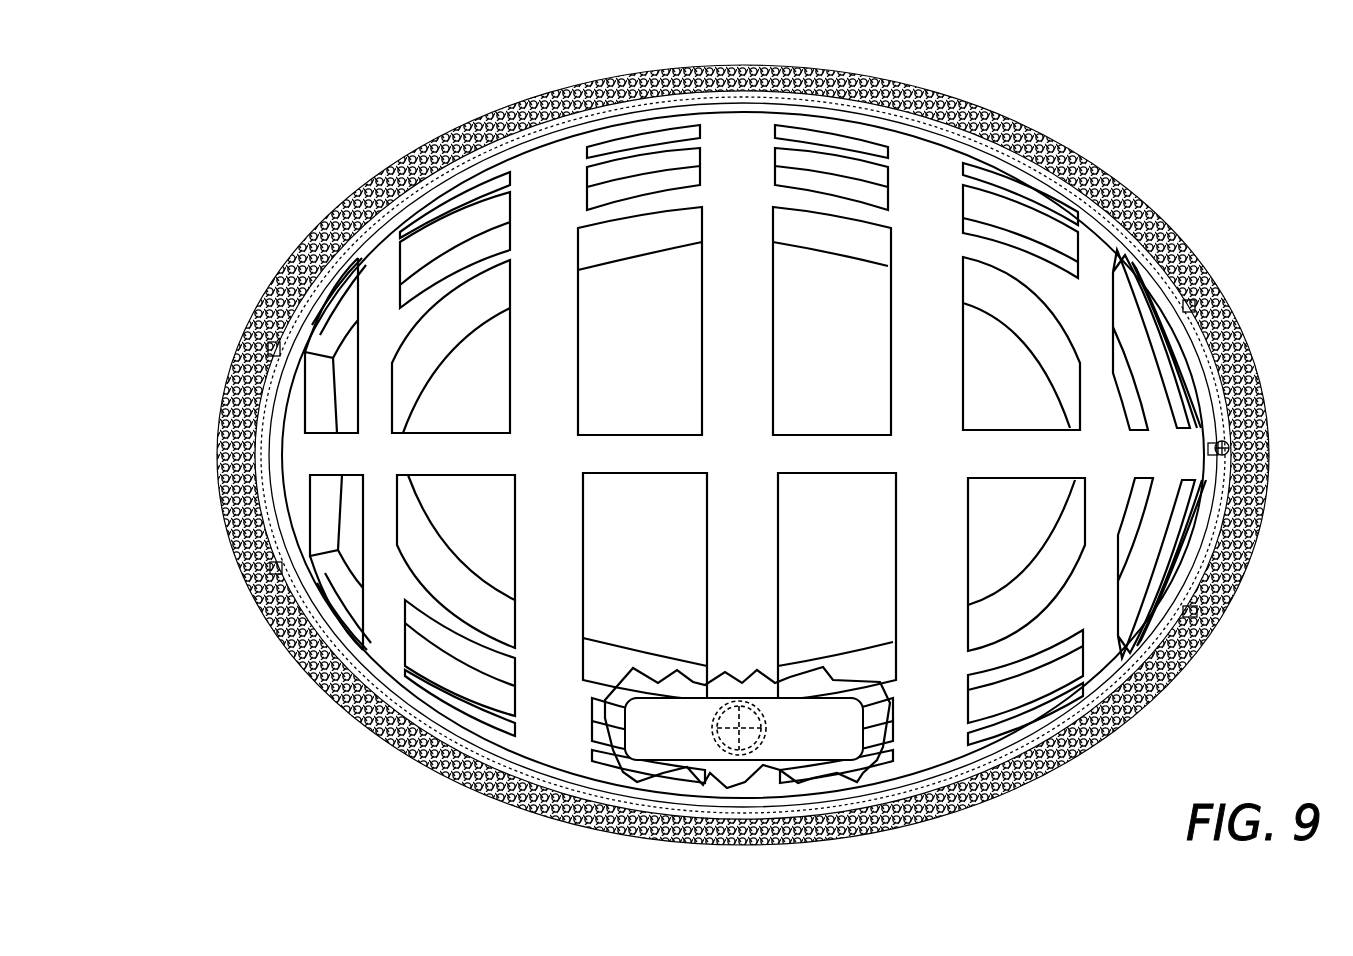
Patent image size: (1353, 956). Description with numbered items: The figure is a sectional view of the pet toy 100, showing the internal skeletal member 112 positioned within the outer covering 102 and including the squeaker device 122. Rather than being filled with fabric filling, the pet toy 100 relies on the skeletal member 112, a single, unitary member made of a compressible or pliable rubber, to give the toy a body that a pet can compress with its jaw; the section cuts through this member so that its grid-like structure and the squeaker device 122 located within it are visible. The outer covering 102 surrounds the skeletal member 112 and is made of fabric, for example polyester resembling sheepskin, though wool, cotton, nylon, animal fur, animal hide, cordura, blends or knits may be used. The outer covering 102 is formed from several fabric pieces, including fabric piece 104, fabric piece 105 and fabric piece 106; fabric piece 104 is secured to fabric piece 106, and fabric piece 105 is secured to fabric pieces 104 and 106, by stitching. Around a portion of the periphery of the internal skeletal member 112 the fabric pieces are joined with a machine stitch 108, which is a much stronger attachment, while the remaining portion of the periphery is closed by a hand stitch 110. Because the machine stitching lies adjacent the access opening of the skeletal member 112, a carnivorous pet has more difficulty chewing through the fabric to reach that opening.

The pet toy 100 is at (1188, 128).
The outer covering 102 is at (1097, 178).
The fabric piece 104 is at (474, 135).
The fabric piece 105 is at (226, 482).
The fabric piece 106 is at (746, 816).
The machine stitch 108 is at (1197, 302).
The hand stitch 110 is at (1233, 448).
The internal skeletal member 112 is at (645, 130).
The squeaker device 122 is at (830, 745).